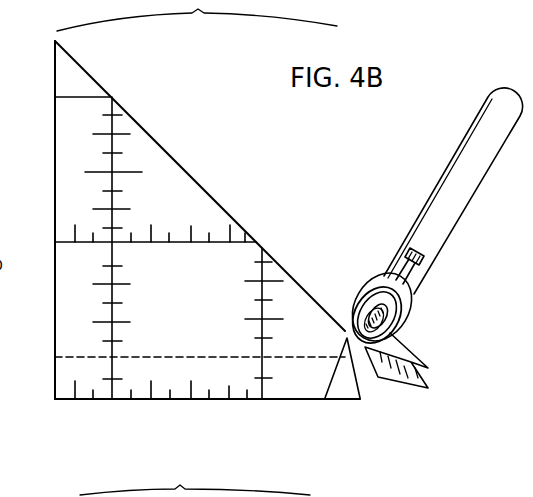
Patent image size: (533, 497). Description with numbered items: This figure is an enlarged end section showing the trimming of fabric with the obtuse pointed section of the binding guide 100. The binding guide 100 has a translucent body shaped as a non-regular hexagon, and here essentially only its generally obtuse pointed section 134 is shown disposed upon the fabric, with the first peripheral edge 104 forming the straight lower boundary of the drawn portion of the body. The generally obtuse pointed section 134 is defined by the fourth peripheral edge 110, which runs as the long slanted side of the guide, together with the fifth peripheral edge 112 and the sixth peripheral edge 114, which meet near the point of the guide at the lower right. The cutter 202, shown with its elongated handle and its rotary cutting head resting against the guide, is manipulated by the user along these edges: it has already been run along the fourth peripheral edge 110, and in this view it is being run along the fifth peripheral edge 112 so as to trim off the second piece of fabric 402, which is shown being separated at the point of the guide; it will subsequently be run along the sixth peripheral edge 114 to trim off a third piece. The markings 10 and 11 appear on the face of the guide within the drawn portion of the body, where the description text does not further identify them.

The binding guide 100 is at (255, 187).
The first peripheral edge 104 is at (88, 402).
The fourth peripheral edge 110 is at (165, 143).
The fifth peripheral edge 112 is at (346, 361).
The sixth peripheral edge 114 is at (341, 394).
The generally obtuse pointed section 134 is at (197, 247).
The cutter 202 is at (501, 124).
The second piece of fabric 402 is at (420, 382).
The scale marking 10 is at (71, 342).
The scale marking 11 is at (222, 342).